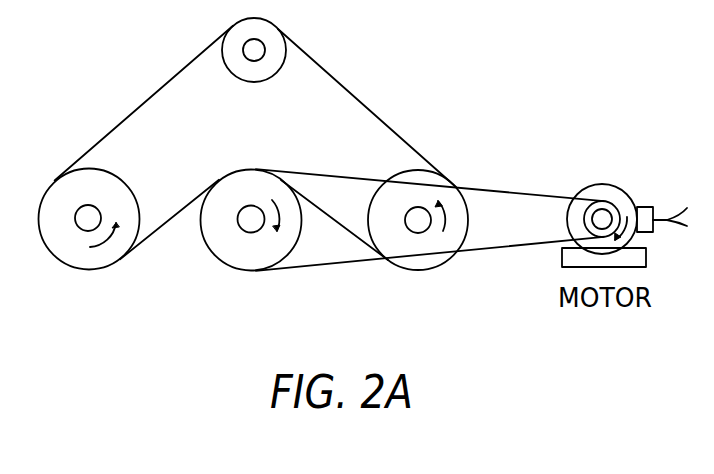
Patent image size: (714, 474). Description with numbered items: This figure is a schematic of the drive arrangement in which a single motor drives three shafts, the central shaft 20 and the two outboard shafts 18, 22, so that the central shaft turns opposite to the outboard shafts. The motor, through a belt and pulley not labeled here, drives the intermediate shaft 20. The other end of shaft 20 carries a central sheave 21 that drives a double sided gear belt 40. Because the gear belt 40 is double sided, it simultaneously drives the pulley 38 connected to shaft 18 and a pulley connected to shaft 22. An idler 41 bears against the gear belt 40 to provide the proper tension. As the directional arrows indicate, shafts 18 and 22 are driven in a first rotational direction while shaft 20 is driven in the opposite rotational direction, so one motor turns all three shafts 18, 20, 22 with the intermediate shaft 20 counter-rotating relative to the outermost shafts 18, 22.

The shaft 18 is at (450, 243).
The shaft 20 is at (253, 240).
The central sheave 21 is at (287, 257).
The shaft 22 is at (80, 232).
The pulley 38 is at (470, 229).
The double sided gear belt 40 is at (381, 120).
The idler 41 is at (285, 62).